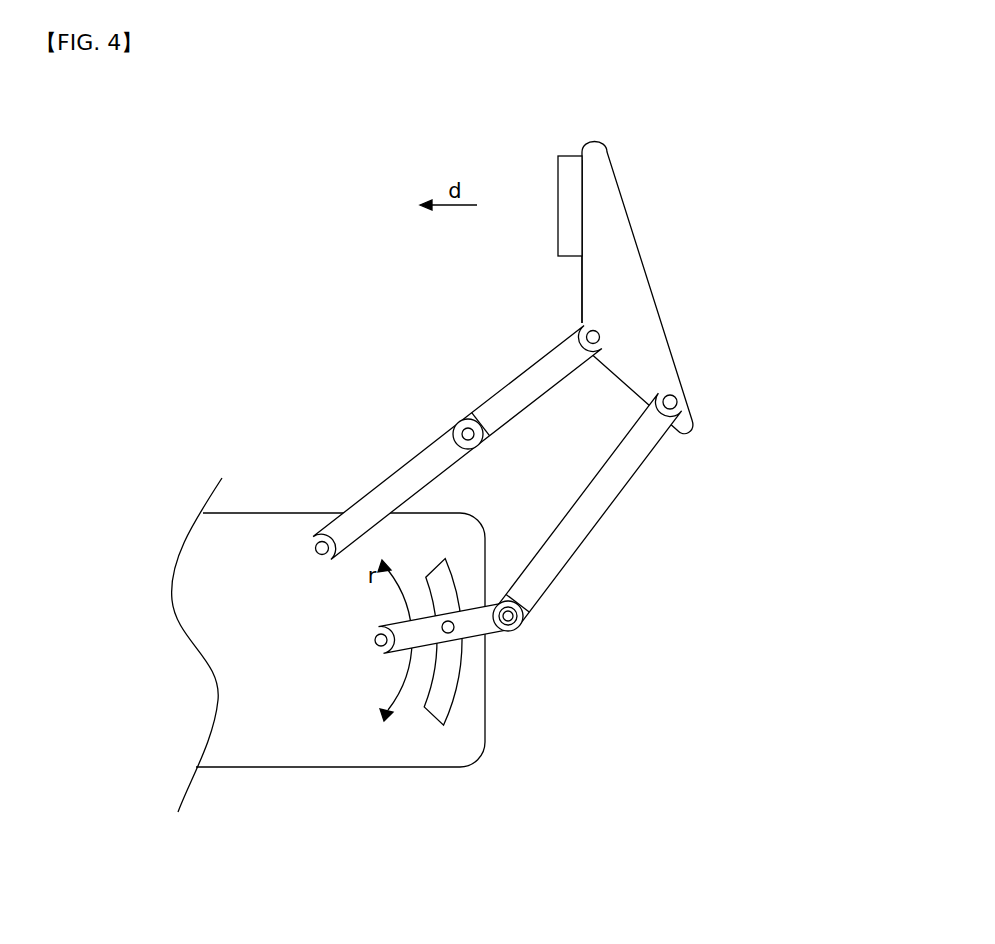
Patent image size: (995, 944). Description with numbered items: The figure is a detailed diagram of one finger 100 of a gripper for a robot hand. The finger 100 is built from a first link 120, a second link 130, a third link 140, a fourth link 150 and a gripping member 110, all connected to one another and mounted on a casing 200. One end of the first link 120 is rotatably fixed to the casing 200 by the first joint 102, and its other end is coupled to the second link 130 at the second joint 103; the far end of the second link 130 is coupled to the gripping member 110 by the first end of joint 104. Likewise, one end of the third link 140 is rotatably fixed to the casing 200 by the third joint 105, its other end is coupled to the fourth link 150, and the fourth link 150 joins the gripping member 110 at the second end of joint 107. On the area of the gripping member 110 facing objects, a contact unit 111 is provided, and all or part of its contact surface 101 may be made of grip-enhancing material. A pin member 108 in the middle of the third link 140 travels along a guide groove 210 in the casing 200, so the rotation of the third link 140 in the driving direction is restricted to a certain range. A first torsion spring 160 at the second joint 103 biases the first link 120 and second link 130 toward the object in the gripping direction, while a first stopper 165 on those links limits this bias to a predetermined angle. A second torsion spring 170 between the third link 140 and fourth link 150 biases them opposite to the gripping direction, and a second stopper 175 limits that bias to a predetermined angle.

The finger 100 is at (664, 269).
The contact surface 101 is at (558, 240).
The first joint 102 is at (323, 537).
The second joint 103 is at (455, 427).
The first end of joint 104 is at (587, 328).
The third joint 105 is at (373, 648).
The second end of joint 107 is at (684, 398).
The pin member 108 is at (452, 573).
The gripping member 110 is at (643, 327).
The contact unit 111 is at (568, 170).
The first link 120 is at (397, 472).
The second link 130 is at (505, 382).
The third link 140 is at (473, 625).
The fourth link 150 is at (613, 503).
The first torsion spring 160 is at (473, 438).
The first stopper 165 is at (485, 425).
The second torsion spring 170 is at (518, 617).
The second stopper 175 is at (519, 598).
The casing 200 is at (313, 743).
The guide groove 210 is at (447, 690).